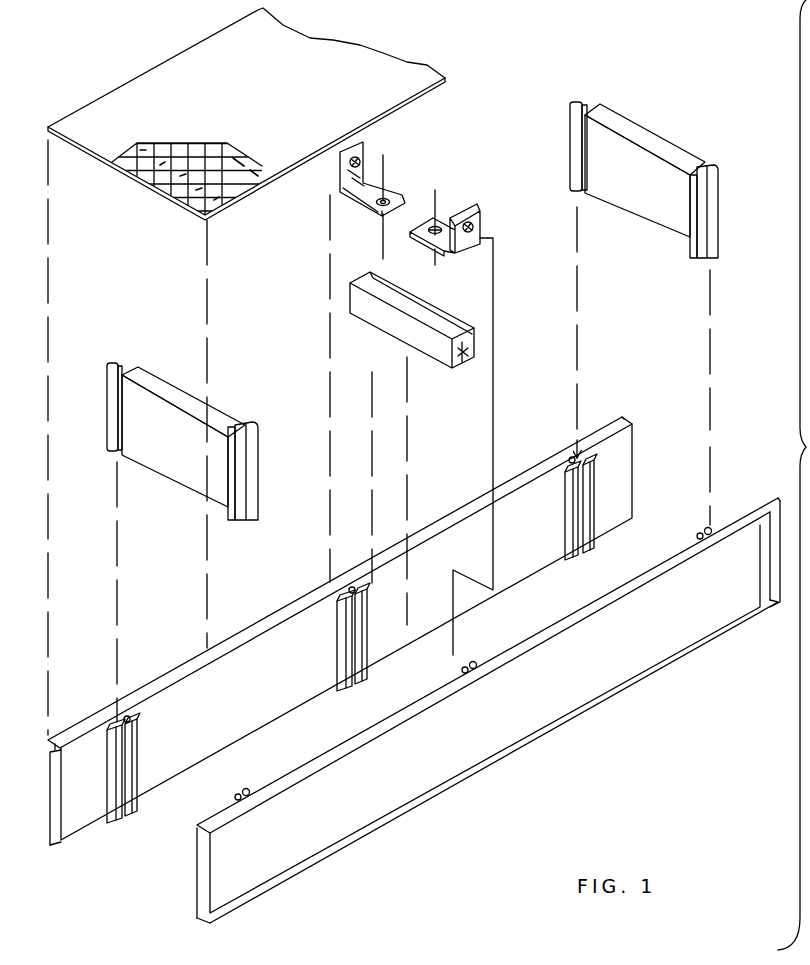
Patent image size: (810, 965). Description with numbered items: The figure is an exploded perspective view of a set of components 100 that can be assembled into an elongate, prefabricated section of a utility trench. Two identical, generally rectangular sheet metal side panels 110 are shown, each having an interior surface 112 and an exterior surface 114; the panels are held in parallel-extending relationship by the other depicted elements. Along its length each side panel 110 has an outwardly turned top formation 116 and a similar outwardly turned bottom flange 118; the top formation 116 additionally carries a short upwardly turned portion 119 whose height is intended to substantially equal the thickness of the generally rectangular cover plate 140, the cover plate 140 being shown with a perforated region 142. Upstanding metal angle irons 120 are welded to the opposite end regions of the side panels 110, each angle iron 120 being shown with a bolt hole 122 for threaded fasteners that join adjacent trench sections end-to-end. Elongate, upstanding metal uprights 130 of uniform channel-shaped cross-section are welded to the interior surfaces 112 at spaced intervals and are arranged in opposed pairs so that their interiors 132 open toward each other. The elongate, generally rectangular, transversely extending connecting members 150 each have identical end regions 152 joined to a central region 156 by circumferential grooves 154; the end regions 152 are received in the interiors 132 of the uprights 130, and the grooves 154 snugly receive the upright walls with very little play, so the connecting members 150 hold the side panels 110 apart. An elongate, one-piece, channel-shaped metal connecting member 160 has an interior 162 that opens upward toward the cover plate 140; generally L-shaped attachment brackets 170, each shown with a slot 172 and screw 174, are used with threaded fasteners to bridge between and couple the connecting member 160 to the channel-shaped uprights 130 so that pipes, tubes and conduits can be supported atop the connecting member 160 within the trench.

The set of components 100 is at (668, 782).
The side panel 110 is at (414, 661).
The interior surface 112 is at (293, 700).
The exterior surface 114 is at (293, 852).
The top formation 116 is at (625, 422).
The bottom flange 118 is at (494, 763).
The upwardly turned portion 119 is at (587, 425).
The angle iron 120 is at (62, 838).
The bolt hole 122 is at (56, 797).
The upright 130 is at (143, 745).
The interior 132 is at (127, 716).
The cover plate 140 is at (246, 111).
The mesh 142 is at (111, 100).
The connecting member 150 is at (407, 302).
The end region 152 is at (582, 106).
The groove 154 is at (580, 139).
The central region 156 is at (643, 213).
The connecting member 160 is at (440, 335).
The interior 162 is at (470, 344).
The attachment bracket 170 is at (406, 210).
The slot 172 is at (385, 192).
The screw 174 is at (362, 166).